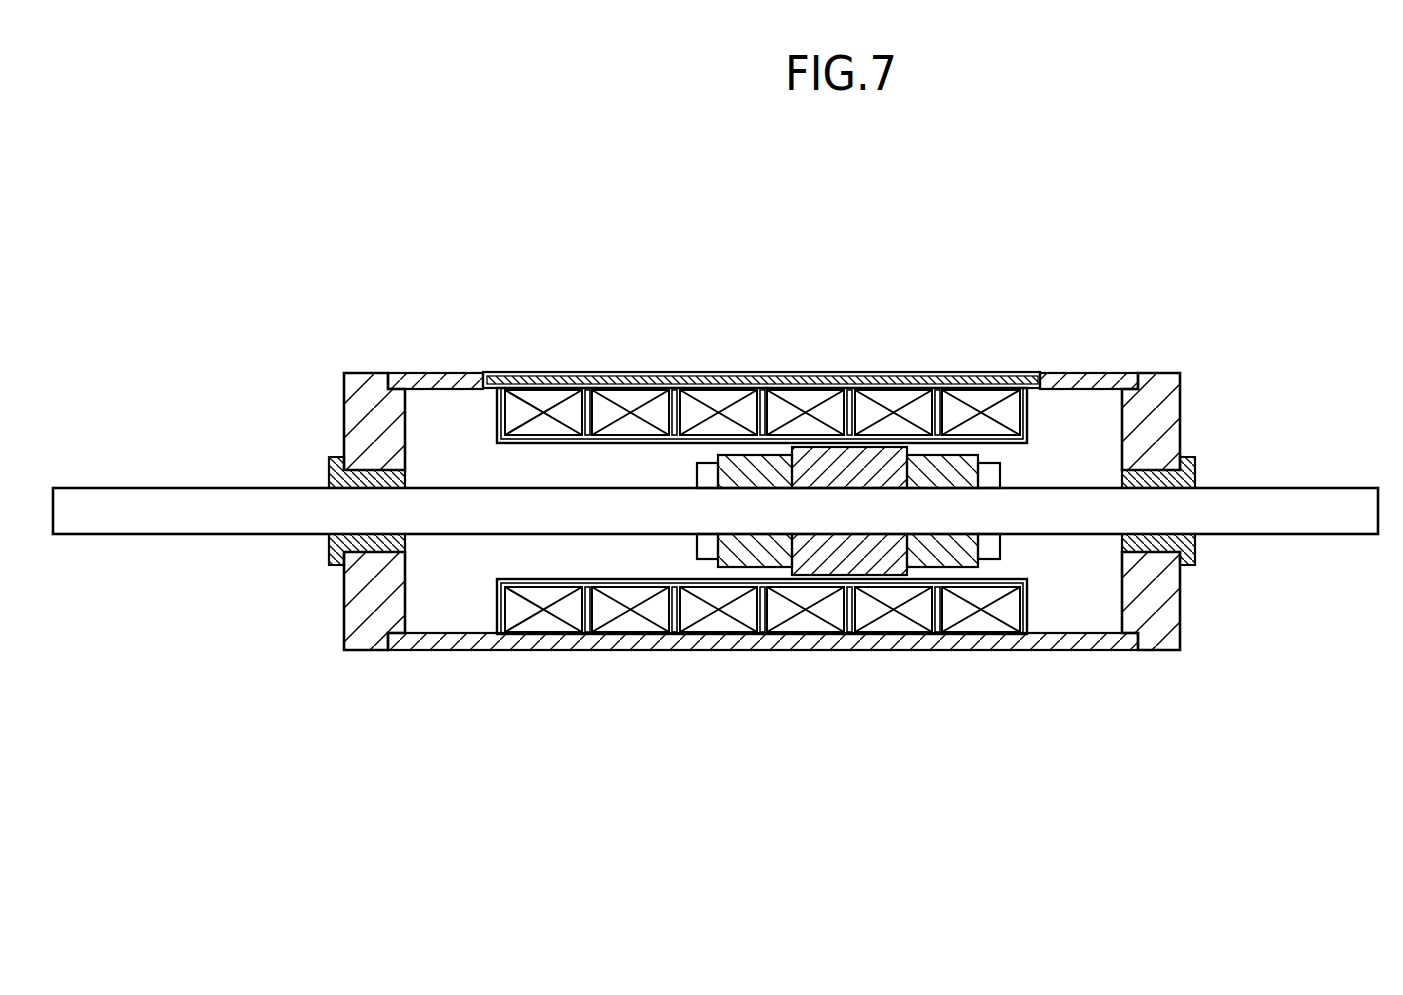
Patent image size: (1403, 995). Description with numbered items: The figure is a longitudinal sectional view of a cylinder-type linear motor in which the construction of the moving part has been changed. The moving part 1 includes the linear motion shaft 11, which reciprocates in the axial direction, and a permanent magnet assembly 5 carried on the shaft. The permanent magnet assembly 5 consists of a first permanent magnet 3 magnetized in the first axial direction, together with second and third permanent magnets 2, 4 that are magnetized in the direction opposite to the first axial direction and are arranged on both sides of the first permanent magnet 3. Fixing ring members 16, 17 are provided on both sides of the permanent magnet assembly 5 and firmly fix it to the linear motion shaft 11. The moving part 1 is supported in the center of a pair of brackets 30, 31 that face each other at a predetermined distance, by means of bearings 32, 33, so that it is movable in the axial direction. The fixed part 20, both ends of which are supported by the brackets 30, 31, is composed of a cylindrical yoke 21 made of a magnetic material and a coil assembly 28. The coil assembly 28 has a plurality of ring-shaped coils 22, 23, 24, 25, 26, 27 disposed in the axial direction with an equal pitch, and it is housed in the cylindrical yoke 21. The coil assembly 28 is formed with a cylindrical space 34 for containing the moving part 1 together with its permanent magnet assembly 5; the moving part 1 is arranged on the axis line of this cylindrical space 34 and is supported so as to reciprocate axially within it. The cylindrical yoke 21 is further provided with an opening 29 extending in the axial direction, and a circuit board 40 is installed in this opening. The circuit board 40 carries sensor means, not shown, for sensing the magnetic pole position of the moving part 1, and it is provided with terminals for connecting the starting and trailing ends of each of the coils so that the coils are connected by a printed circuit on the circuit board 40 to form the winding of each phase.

The moving part 1 is at (854, 523).
The second permanent magnet 2 is at (782, 562).
The first permanent magnet 3 is at (849, 557).
The third permanent magnet 4 is at (951, 562).
The permanent magnet assembly 5 is at (716, 568).
The linear motion shaft 11 is at (1273, 503).
The fixing ring member 16 is at (697, 544).
The fixing ring member 17 is at (995, 547).
The fixed part 20 is at (497, 600).
The cylindrical yoke 21 is at (412, 642).
The ring-shaped coil 22 is at (545, 400).
The ring-shaped coil 23 is at (650, 400).
The ring-shaped coil 24 is at (722, 402).
The ring-shaped coil 25 is at (800, 403).
The ring-shaped coil 26 is at (883, 402).
The ring-shaped coil 27 is at (967, 400).
The coil assembly 28 is at (1035, 418).
The opening 29 is at (604, 390).
The bracket 30 is at (355, 635).
The bracket 31 is at (1160, 640).
The bearing 32 is at (329, 548).
The bearing 33 is at (1195, 551).
The cylindrical space 34 is at (610, 468).
The circuit board 40 is at (500, 378).